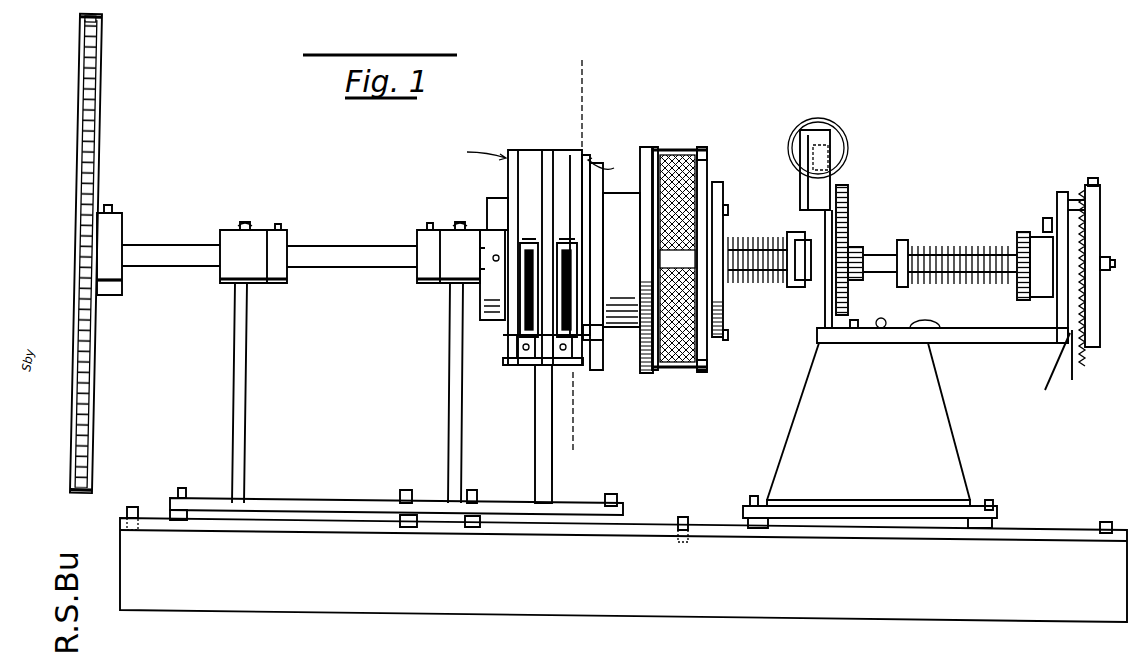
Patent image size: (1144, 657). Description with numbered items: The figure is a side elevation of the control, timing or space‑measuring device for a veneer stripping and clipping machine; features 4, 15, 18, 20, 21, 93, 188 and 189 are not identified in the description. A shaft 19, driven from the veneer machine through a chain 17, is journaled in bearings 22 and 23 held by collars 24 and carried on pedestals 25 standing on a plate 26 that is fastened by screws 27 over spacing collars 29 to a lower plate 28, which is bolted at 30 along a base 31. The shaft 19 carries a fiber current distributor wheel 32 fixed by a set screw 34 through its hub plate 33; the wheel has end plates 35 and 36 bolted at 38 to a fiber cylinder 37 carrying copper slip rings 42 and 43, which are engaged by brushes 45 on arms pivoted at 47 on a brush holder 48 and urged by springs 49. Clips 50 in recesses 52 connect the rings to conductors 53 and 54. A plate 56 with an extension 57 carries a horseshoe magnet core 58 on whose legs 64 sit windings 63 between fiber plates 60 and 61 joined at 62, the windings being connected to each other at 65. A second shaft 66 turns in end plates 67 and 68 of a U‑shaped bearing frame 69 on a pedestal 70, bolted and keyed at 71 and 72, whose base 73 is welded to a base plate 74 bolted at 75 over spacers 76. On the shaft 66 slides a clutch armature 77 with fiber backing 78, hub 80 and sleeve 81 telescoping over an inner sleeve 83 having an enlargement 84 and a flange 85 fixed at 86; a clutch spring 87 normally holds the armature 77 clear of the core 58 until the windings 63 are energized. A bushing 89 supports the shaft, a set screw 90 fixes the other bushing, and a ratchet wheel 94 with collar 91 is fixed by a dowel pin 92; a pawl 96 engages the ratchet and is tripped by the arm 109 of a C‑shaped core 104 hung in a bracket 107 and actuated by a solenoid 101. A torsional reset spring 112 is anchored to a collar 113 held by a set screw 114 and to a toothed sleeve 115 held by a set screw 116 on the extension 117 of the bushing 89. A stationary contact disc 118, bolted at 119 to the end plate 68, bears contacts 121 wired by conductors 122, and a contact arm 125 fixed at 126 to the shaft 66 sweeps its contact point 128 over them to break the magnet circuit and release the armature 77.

The section line 4 is at (584, 419).
The machine 15 is at (345, 223).
The chain 17 is at (80, 116).
The rack teeth 18 is at (82, 172).
The shaft 19 is at (193, 244).
The bearing block 20 is at (118, 296).
The knob 21 is at (112, 210).
The bearing 22 is at (225, 286).
The bearing 23 is at (438, 285).
The collar 24 is at (418, 282).
The frame upright or pedestal 25 is at (449, 375).
The plate 26 is at (275, 497).
The screw 27 is at (632, 495).
The second lower plate 28 is at (327, 530).
The spacing collar 29 is at (448, 558).
The bolt 30 is at (1105, 522).
The base 31 is at (279, 622).
The fiber wheel or current distributor 32 is at (474, 147).
The hub plate 33 is at (496, 198).
The set screw 34 is at (482, 295).
The fiber end plate 35 is at (515, 150).
The fiber end plate 36 is at (587, 152).
The insulation disc or cylinder 37 is at (549, 150).
The bolt 38 is at (508, 166).
The copper slip ring 42 is at (528, 150).
The copper slip ring 43 is at (568, 155).
The carbon brush 45 is at (565, 250).
The pivot 47 is at (545, 362).
The upright brush holder 48 is at (553, 455).
The spring 49 is at (505, 340).
The tongue or clip 50 is at (503, 372).
The recess 52 is at (612, 156).
The conductor 53 is at (592, 152).
The conductor 54 is at (498, 363).
The plate 56 is at (595, 337).
The thickened central portion or extension 57 is at (598, 212).
The horseshoe magnet core 58 is at (622, 198).
The fiber plate 60 is at (645, 385).
The fiber plate 61 is at (708, 362).
The bolt 62 is at (685, 372).
The coil or winding 63 is at (703, 375).
The leg 64 is at (727, 325).
The connection 65 is at (677, 259).
The second shaft 66 is at (876, 252).
The upright bearing member 67 is at (827, 338).
The upright bearing member 68 is at (1057, 210).
The U-shaped bearing frame 69 is at (934, 340).
The pedestal 70 is at (945, 440).
The bolt 71 is at (852, 330).
The key 72 is at (880, 330).
The pedestal base 73 is at (860, 498).
The base plate 74 is at (960, 505).
The bolt 75 is at (983, 502).
The spacing collar 76 is at (982, 530).
The clutch armature 77 is at (718, 185).
The fiber disc backing 78 is at (724, 205).
The central hub 80 is at (722, 330).
The sleeve 81 is at (745, 240).
The inner sleeve 83 is at (778, 236).
The enlargement 84 is at (790, 285).
The annular end flange 85 is at (812, 283).
The fastening 86 is at (792, 257).
The coiled clutch spring 87 is at (758, 283).
The bearing bushing 89 is at (1033, 266).
The dowel pin or set screw 90 is at (800, 290).
The collar portion 91 is at (858, 282).
The dowel pin 92 is at (862, 240).
The ring 93 is at (817, 106).
The ratchet wheel 94 is at (858, 212).
The pawl 96 is at (868, 185).
The solenoid 101 is at (832, 152).
The C-shaped core 104 is at (830, 138).
The bracket or hanger 107 is at (804, 138).
The horizontal inward extension 109 is at (848, 190).
The torsional reset coil spring 112 is at (965, 285).
The collar 113 is at (902, 280).
The set screw 114 is at (912, 235).
The toothed sleeve 115 is at (1014, 240).
The set screw 116 is at (1018, 232).
The bearing extension 117 is at (1043, 298).
The stationary contact disc 118 is at (1076, 342).
The bolt 119 is at (1056, 345).
The contact 121 is at (1100, 310).
The conductor 122 is at (1047, 372).
The rotatable contact arm 125 is at (1100, 215).
The fastening 126 is at (1104, 260).
The contact point 128 is at (1091, 180).
The plunger 188 is at (564, 242).
The plunger 189 is at (524, 246).